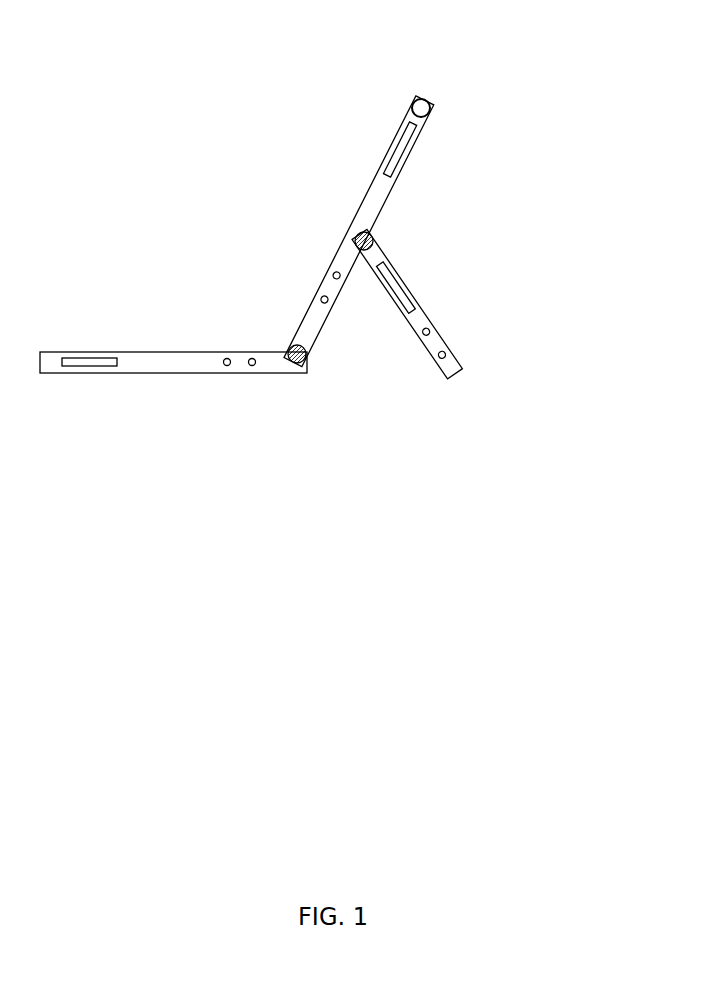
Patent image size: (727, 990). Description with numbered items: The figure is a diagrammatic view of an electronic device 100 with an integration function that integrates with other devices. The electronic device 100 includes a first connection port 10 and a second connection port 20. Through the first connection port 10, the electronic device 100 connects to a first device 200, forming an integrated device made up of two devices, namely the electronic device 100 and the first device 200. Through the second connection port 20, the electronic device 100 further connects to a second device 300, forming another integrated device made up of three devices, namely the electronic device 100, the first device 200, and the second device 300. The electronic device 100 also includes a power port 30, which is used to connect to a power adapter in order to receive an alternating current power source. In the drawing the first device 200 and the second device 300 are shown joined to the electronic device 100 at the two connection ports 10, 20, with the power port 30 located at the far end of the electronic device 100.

The electronic device 100 is at (380, 190).
The first device 200 is at (422, 313).
The second device 300 is at (194, 353).
The first connection port 10 is at (372, 236).
The second connection port 20 is at (297, 348).
The power port 30 is at (416, 99).